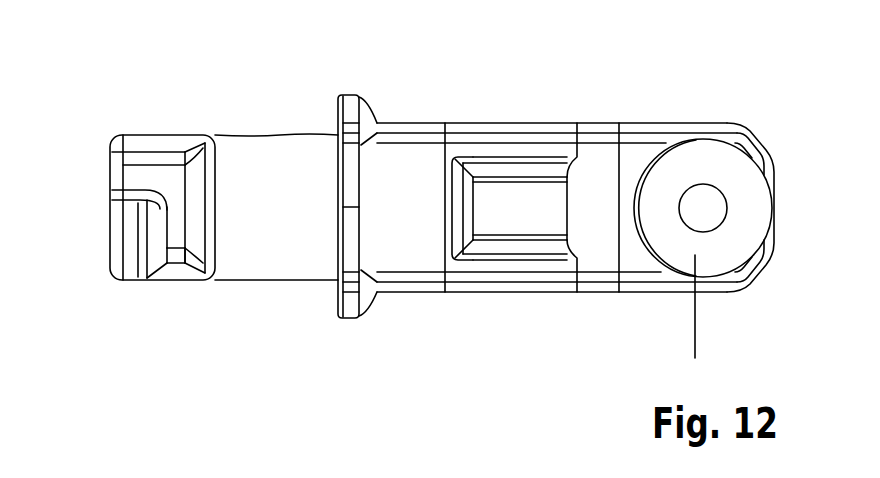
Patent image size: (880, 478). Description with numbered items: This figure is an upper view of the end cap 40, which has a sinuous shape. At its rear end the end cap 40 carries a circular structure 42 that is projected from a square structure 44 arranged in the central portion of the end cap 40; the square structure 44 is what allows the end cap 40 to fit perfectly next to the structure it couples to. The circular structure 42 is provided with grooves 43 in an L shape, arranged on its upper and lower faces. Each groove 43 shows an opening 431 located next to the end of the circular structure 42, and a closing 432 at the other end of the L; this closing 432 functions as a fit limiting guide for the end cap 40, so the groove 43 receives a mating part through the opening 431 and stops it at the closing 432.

The end cap 40 is at (523, 123).
The circular structure 42 is at (272, 235).
The grooves 43 is at (168, 152).
The opening 431 is at (117, 170).
The closing 432 is at (175, 268).
The square structure 44 is at (350, 96).